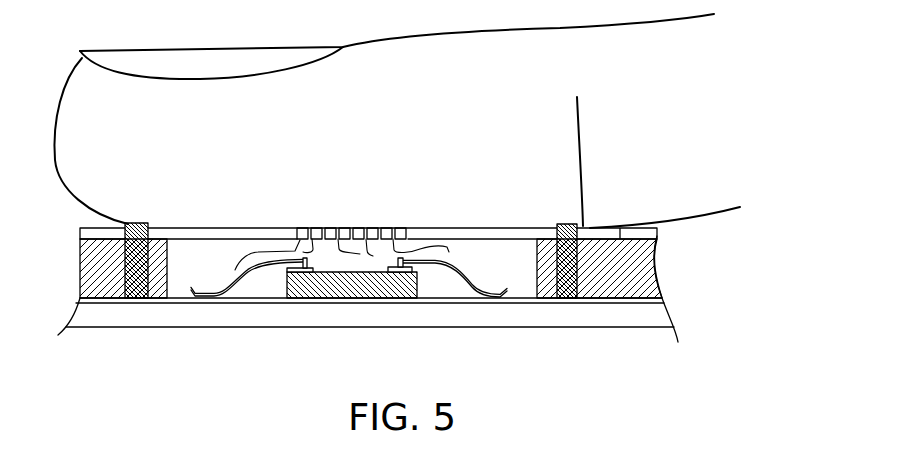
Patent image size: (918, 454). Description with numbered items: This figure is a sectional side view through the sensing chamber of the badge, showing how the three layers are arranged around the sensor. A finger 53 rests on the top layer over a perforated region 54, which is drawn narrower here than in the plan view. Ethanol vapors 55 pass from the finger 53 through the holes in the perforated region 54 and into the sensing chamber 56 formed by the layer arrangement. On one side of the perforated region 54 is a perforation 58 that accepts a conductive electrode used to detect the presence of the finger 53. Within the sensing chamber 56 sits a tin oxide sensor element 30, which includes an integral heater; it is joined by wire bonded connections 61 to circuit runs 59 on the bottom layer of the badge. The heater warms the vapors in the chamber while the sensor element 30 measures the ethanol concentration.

The tin oxide sensor element 30 is at (352, 298).
The finger 53 is at (528, 169).
The perforated region 54 is at (352, 228).
The ethanol vapors 55 is at (233, 268).
The sensing chamber 56 is at (523, 274).
The perforation 58 is at (565, 290).
The circuit runs 59 is at (183, 303).
The wire bonded connections 61 is at (442, 262).